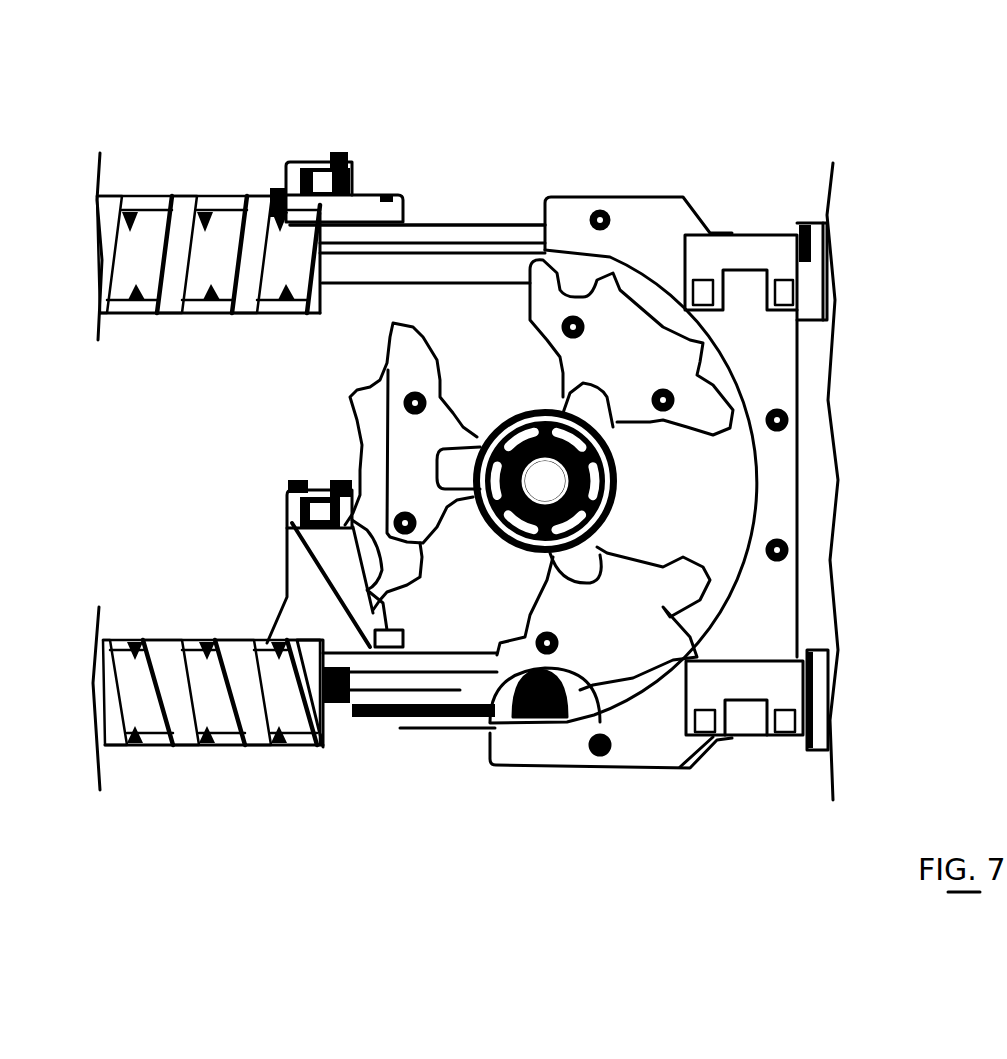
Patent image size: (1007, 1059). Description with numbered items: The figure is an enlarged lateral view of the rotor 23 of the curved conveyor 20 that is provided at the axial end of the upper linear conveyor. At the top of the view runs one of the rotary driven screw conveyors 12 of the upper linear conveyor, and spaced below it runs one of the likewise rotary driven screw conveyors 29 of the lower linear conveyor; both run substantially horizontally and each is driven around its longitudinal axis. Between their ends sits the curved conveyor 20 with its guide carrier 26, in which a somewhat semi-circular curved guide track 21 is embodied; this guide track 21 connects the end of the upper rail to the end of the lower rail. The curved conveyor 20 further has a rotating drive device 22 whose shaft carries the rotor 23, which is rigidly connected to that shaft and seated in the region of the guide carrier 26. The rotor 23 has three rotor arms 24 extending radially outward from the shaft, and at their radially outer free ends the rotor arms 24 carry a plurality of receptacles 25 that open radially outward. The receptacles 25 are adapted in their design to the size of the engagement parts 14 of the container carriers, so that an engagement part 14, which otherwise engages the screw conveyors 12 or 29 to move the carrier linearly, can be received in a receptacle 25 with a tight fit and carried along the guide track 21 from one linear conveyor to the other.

The screw conveyor 12 is at (192, 199).
The engagement part 14 is at (548, 725).
The curved conveyor 20 is at (736, 156).
The guide track 21 is at (762, 486).
The drive device 22 is at (497, 588).
The rotor 23 is at (508, 410).
The rotor arm 24 is at (407, 445).
The receptacle 25 is at (578, 275).
The guide carrier 26 is at (780, 588).
The screw conveyor 29 is at (207, 750).